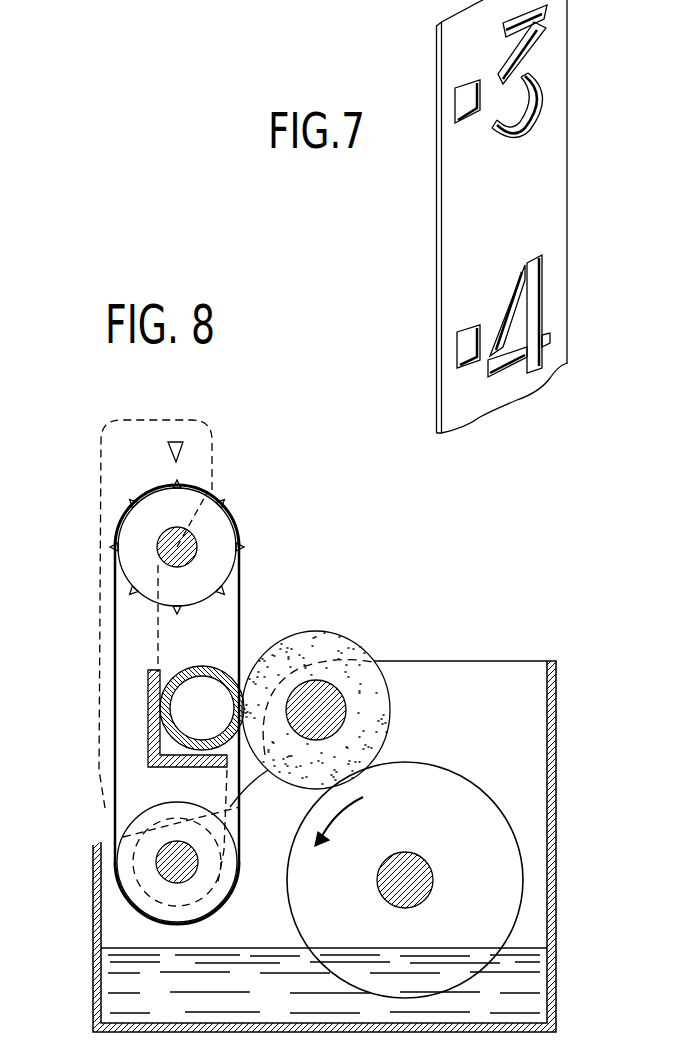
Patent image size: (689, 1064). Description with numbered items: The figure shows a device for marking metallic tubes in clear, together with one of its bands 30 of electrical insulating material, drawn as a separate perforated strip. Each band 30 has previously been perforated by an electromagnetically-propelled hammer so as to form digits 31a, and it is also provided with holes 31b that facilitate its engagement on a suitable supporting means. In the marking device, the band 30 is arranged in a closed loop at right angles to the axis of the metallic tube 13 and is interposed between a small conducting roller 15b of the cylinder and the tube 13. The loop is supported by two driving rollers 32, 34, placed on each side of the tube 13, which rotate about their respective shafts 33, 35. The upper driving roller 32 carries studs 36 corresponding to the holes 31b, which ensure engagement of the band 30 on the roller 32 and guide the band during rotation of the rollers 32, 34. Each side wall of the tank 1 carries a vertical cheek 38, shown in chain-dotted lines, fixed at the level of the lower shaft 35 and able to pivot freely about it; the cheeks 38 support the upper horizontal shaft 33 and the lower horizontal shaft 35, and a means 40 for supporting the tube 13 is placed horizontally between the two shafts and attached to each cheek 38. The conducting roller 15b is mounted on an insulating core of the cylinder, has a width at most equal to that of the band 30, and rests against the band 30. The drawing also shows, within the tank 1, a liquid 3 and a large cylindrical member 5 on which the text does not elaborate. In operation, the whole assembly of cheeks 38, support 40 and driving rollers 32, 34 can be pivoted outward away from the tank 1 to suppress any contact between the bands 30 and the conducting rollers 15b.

In FIG. 8, the tank 1 is at (553, 698).
In FIG. 8, the liquid 3 is at (533, 970).
In FIG. 8, the drum 5 is at (505, 828).
In FIG. 8, the metallic tube 13 is at (187, 668).
In FIG. 8, the small conducting roller 15b is at (343, 646).
In FIG. 7, the band of electrical insulating material 30 is at (437, 228).
In FIG. 8, the band of electrical insulating material 30 is at (240, 594).
In FIG. 7, the digits 31a is at (531, 146).
In FIG. 7, the holes 31b is at (460, 342).
In FIG. 8, the driving roller 32 is at (179, 542).
In FIG. 8, the shaft 33 is at (160, 545).
In FIG. 8, the driving roller 34 is at (127, 880).
In FIG. 8, the shaft 35 is at (168, 845).
In FIG. 8, the studs 36 is at (238, 526).
In FIG. 8, the vertical cheek 38 is at (200, 421).
In FIG. 8, the means for supporting the metallic tube 40 is at (152, 768).